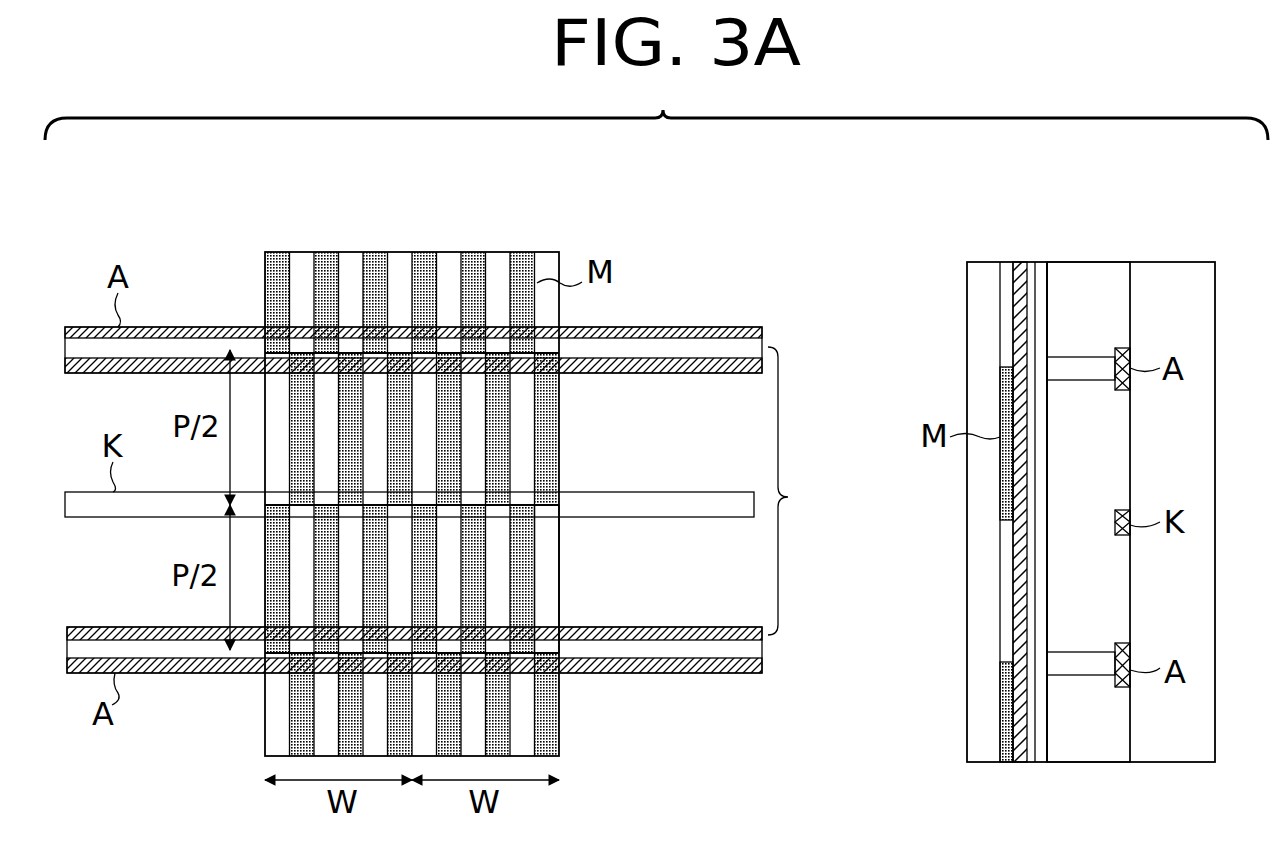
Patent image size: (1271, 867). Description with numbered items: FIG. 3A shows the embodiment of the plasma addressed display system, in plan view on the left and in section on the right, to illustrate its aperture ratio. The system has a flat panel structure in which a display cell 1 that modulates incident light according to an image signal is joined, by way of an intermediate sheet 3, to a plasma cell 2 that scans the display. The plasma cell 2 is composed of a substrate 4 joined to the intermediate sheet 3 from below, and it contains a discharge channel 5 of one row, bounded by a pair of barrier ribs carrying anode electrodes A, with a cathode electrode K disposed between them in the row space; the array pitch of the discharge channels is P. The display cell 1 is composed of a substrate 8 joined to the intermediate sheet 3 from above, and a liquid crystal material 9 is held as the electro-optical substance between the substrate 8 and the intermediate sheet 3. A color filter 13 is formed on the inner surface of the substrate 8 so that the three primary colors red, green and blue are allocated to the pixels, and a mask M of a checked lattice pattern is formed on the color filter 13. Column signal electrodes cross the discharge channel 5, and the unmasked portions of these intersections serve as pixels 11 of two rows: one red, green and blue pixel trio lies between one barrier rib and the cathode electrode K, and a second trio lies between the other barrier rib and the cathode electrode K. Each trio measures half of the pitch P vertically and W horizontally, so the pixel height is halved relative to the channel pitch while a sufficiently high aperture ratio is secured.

The display cell 1 is at (967, 775).
The plasma cell 2 is at (1215, 775).
The intermediate sheet 3 is at (1045, 262).
The substrate 4 is at (1195, 583).
The discharge channel 5 is at (1160, 445).
The substrate 8 is at (980, 262).
The liquid crystal material 9 is at (1033, 262).
The pixel 11 is at (552, 530).
The color filter 13 is at (1005, 262).